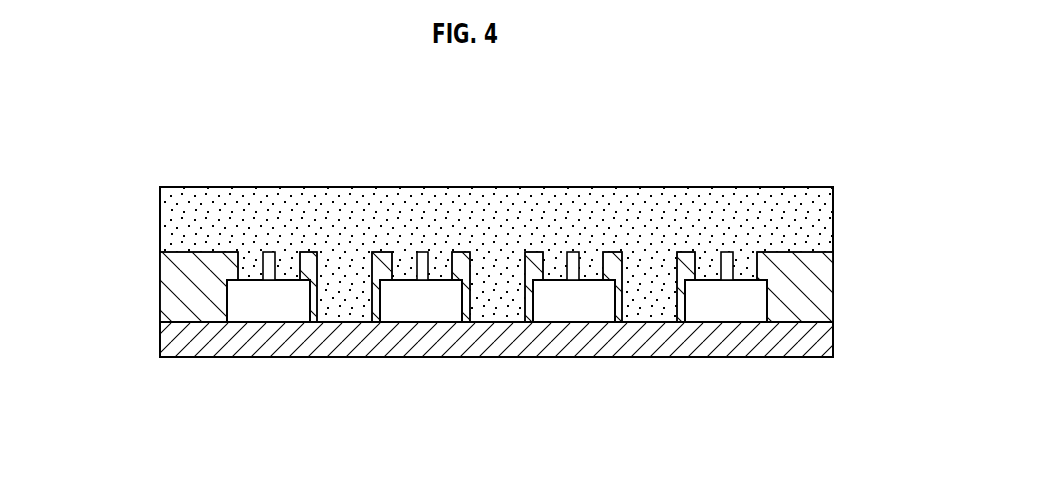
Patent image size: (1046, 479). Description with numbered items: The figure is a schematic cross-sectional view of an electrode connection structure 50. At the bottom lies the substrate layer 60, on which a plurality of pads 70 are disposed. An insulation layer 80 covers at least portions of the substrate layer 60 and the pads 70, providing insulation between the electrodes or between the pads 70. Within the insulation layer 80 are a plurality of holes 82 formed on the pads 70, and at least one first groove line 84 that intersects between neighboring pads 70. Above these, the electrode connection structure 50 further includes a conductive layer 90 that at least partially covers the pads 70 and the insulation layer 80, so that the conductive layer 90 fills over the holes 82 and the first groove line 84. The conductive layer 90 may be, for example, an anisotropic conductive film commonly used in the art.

The electrode connection structure 50 is at (195, 103).
The substrate layer 60 is at (166, 346).
The pad 70 is at (743, 292).
The insulation layer 80 is at (170, 288).
The hole 82 is at (288, 250).
The first groove line 84 is at (499, 250).
The conductive layer 90 is at (634, 205).